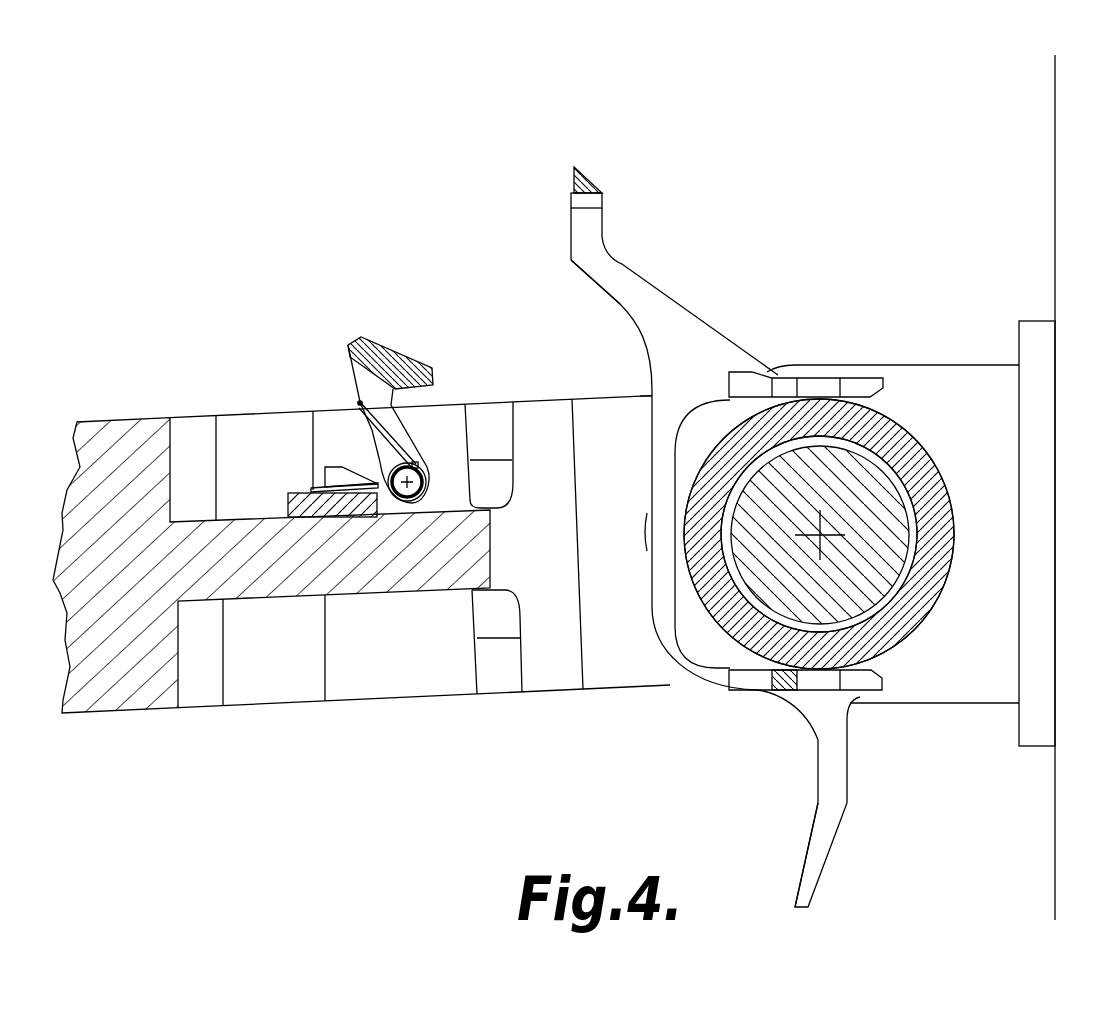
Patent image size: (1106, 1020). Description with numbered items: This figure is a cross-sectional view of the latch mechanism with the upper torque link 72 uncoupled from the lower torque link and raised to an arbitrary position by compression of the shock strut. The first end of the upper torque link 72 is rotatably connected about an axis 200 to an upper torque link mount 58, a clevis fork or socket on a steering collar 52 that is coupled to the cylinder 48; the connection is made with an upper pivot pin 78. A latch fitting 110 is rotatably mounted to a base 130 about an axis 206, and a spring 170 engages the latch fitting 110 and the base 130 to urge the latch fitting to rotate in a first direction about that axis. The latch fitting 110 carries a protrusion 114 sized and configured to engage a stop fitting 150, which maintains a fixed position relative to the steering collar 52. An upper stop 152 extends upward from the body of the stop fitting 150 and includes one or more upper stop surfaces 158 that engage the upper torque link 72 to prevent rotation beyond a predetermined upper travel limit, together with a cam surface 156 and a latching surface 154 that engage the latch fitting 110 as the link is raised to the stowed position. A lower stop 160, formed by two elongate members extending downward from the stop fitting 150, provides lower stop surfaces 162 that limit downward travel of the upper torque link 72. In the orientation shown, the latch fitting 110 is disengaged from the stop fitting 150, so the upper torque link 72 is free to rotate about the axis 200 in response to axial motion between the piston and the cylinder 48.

The cylinder 48 is at (1055, 112).
The steering collar 52 is at (1030, 750).
The upper torque link mount 58 is at (942, 366).
The upper torque link 72 is at (122, 420).
The upper pivot pin 78 is at (907, 567).
The latch fitting 110 is at (350, 355).
The protrusion 114 is at (400, 357).
The base 130 is at (288, 497).
The stop fitting 150 is at (699, 514).
The upper stop 152 is at (623, 262).
The latching surface 154 is at (591, 171).
The cam surface 156 is at (571, 225).
The upper stop surface 158 is at (585, 272).
The lower stop 160 is at (835, 838).
The lower stop surface 162 is at (803, 862).
The spring 170 is at (373, 438).
The axis 200 is at (820, 535).
The axis 206 is at (428, 463).